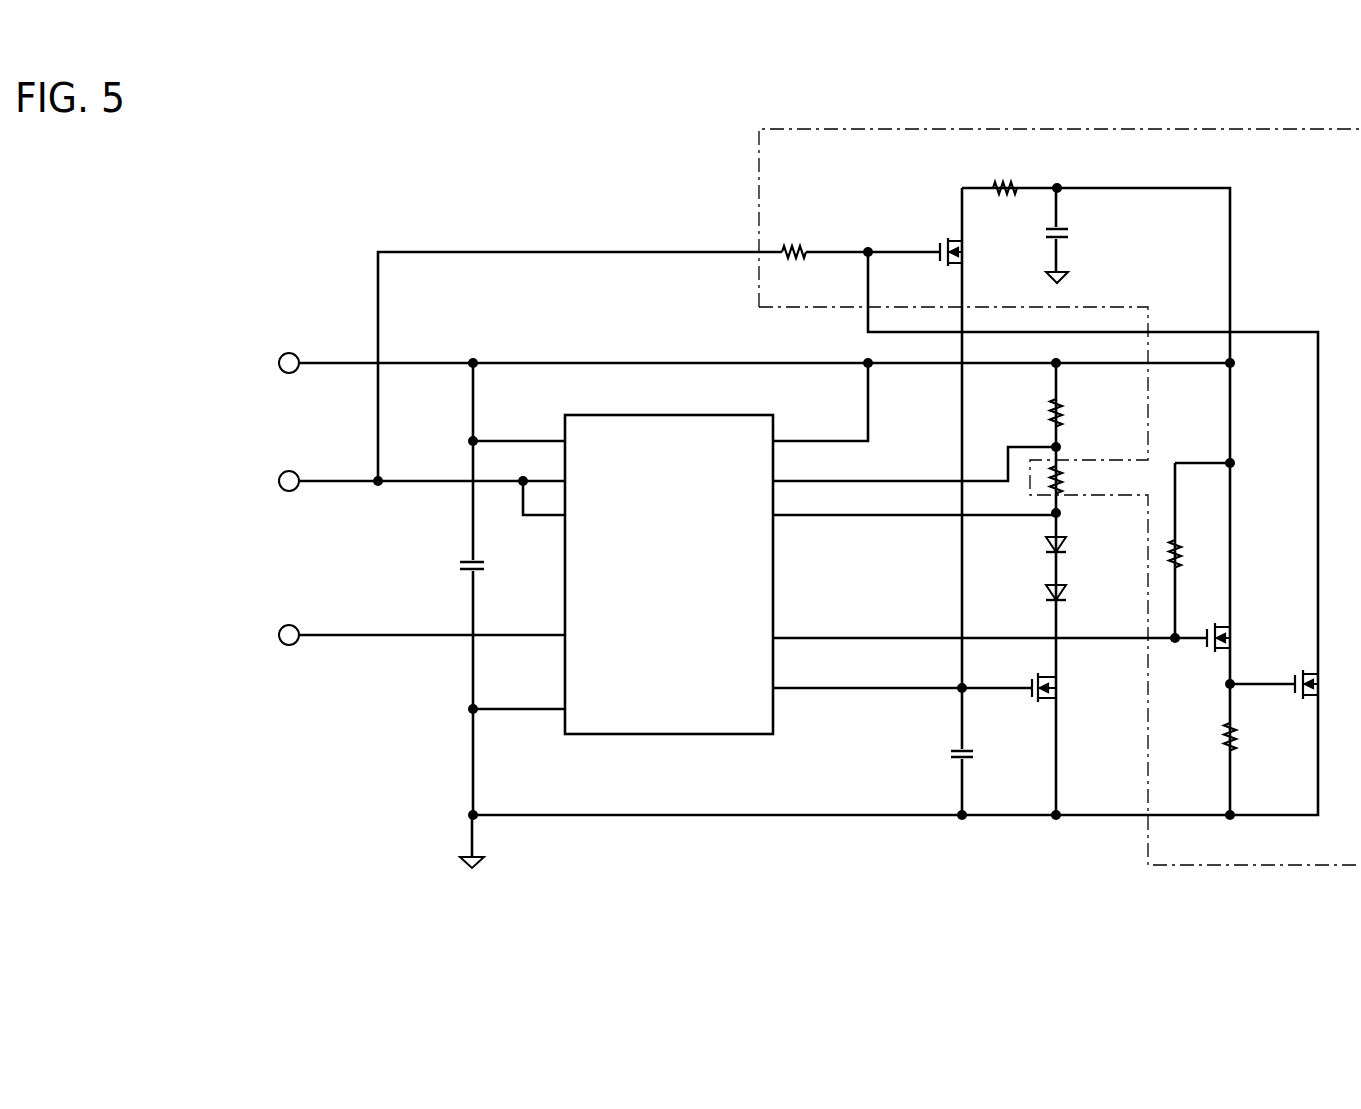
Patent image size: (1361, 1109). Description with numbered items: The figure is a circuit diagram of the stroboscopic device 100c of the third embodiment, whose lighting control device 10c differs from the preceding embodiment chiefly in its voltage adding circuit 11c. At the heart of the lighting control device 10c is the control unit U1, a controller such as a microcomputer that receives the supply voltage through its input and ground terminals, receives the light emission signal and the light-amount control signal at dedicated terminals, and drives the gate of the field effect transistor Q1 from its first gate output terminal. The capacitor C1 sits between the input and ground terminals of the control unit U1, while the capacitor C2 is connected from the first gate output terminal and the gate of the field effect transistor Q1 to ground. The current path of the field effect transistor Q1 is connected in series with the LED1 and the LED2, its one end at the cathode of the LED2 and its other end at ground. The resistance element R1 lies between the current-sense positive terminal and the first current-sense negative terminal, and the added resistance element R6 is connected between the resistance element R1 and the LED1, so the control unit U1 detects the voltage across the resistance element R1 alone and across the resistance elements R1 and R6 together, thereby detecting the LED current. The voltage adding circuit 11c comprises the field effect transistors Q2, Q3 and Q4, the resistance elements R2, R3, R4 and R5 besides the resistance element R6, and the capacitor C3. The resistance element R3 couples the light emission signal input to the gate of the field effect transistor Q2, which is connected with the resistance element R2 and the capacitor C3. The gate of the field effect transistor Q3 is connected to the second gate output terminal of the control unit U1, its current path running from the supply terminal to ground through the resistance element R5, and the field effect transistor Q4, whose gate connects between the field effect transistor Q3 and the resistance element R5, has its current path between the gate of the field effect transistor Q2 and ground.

The stroboscopic device 100c is at (882, 923).
The lighting control device 10c is at (559, 202).
The voltage adding circuit 11c is at (759, 170).
The control unit U1 is at (669, 560).
The resistance element R1 is at (1075, 417).
The resistance element R2 is at (1001, 169).
The resistance element R3 is at (861, 232).
The resistance element R4 is at (1192, 566).
The resistance element R5 is at (1247, 749).
The resistance element R6 is at (1075, 481).
The capacitor C1 is at (454, 563).
The capacitor C2 is at (980, 757).
The capacitor C3 is at (1078, 255).
The field effect transistor Q1 is at (1063, 687).
The field effect transistor Q2 is at (969, 252).
The field effect transistor Q3 is at (1238, 639).
The field effect transistor Q4 is at (1326, 687).
The LED LED1 is at (1090, 542).
The LED LED2 is at (1090, 591).